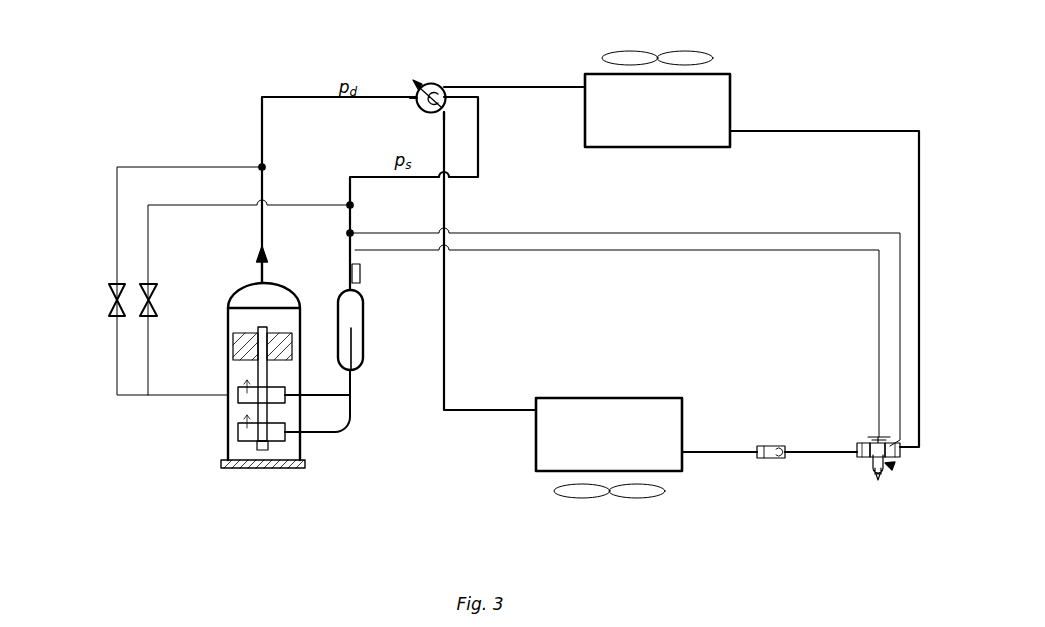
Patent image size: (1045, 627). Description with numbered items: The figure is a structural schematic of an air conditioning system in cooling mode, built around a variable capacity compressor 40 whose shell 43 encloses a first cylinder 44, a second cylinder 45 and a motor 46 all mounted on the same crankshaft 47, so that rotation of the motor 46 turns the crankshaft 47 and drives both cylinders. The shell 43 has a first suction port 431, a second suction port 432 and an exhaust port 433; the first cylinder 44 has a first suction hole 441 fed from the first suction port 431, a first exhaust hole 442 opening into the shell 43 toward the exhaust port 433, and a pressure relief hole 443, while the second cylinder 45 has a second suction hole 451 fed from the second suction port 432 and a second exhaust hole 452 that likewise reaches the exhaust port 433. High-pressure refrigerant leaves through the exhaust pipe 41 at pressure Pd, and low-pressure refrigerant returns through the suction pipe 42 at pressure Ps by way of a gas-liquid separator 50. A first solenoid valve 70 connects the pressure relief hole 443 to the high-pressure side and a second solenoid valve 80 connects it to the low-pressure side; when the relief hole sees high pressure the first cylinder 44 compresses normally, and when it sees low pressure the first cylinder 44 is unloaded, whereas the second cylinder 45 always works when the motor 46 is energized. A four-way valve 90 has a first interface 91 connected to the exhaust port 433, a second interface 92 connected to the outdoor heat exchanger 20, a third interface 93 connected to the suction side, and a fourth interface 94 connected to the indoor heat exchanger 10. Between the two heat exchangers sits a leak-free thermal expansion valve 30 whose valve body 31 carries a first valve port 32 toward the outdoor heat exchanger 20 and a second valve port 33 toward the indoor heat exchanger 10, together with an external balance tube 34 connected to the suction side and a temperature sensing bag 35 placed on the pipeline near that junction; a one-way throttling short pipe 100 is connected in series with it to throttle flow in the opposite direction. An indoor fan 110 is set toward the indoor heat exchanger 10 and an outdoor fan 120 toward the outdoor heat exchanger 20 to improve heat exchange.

The indoor heat exchanger 10 is at (620, 397).
The outdoor heat exchanger 20 is at (733, 85).
The leak-free thermal expansion valve 30 is at (887, 456).
The valve body 31 is at (873, 460).
The first valve port 32 is at (898, 455).
The second valve port 33 is at (860, 443).
The external balance tube 34 is at (655, 233).
The temperature sensing bag 35 is at (362, 274).
The variable capacity compressor 40 is at (252, 336).
The exhaust pipe 41 is at (300, 96).
The suction pipe 42 is at (352, 216).
The shell 43 is at (227, 320).
The first cylinder 44 is at (238, 389).
The second cylinder 45 is at (238, 437).
The motor 46 is at (240, 346).
The crankshaft 47 is at (268, 449).
The gas-liquid separator 50 is at (340, 291).
The first solenoid valve 70 is at (108, 294).
The second solenoid valve 80 is at (147, 284).
The four-way valve 90 is at (418, 82).
The first interface 91 is at (400, 108).
The second interface 92 is at (452, 75).
The third interface 93 is at (457, 107).
The fourth interface 94 is at (432, 123).
The one-way throttling short pipe 100 is at (768, 445).
The indoor fan 110 is at (645, 498).
The outdoor fan 120 is at (700, 51).
The first suction port 431 is at (315, 394).
The second suction port 432 is at (302, 433).
The exhaust port 433 is at (266, 284).
The first suction hole 441 is at (290, 393).
The first exhaust hole 442 is at (244, 380).
The pressure relief hole 443 is at (238, 401).
The second suction hole 451 is at (290, 431).
The second exhaust hole 452 is at (244, 414).